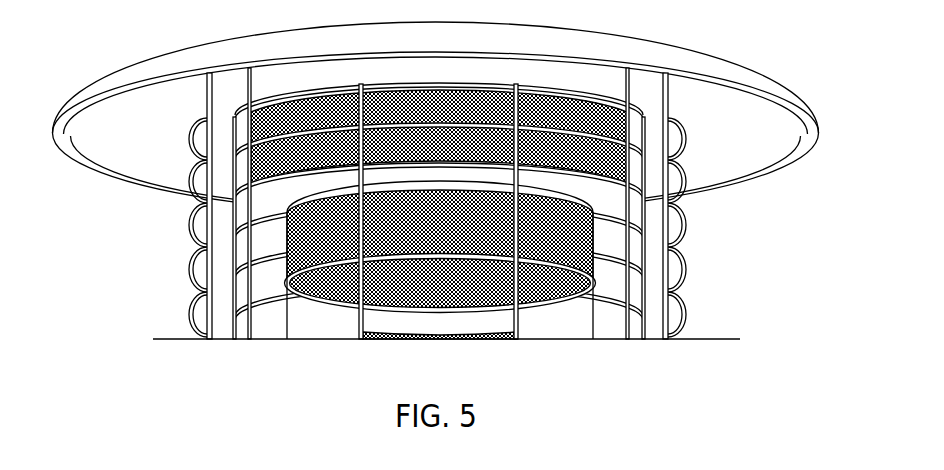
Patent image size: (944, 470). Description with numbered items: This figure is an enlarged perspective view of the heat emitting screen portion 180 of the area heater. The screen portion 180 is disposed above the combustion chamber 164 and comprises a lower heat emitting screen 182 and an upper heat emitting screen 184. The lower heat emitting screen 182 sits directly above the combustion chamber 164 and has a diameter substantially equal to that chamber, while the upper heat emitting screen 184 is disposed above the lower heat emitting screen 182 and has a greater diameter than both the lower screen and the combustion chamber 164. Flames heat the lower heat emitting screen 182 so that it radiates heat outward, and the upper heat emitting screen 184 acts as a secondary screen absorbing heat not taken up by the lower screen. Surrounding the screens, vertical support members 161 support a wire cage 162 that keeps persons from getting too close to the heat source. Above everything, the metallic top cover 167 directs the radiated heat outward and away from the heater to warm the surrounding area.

The top cover 167 is at (621, 52).
The vertical support member 161 is at (652, 251).
The wire cage 162 is at (675, 222).
The combustion chamber 164 is at (320, 320).
The screen portion 180 is at (187, 229).
The lower heat emitting screen 182 is at (290, 243).
The upper heat emitting screen 184 is at (250, 173).